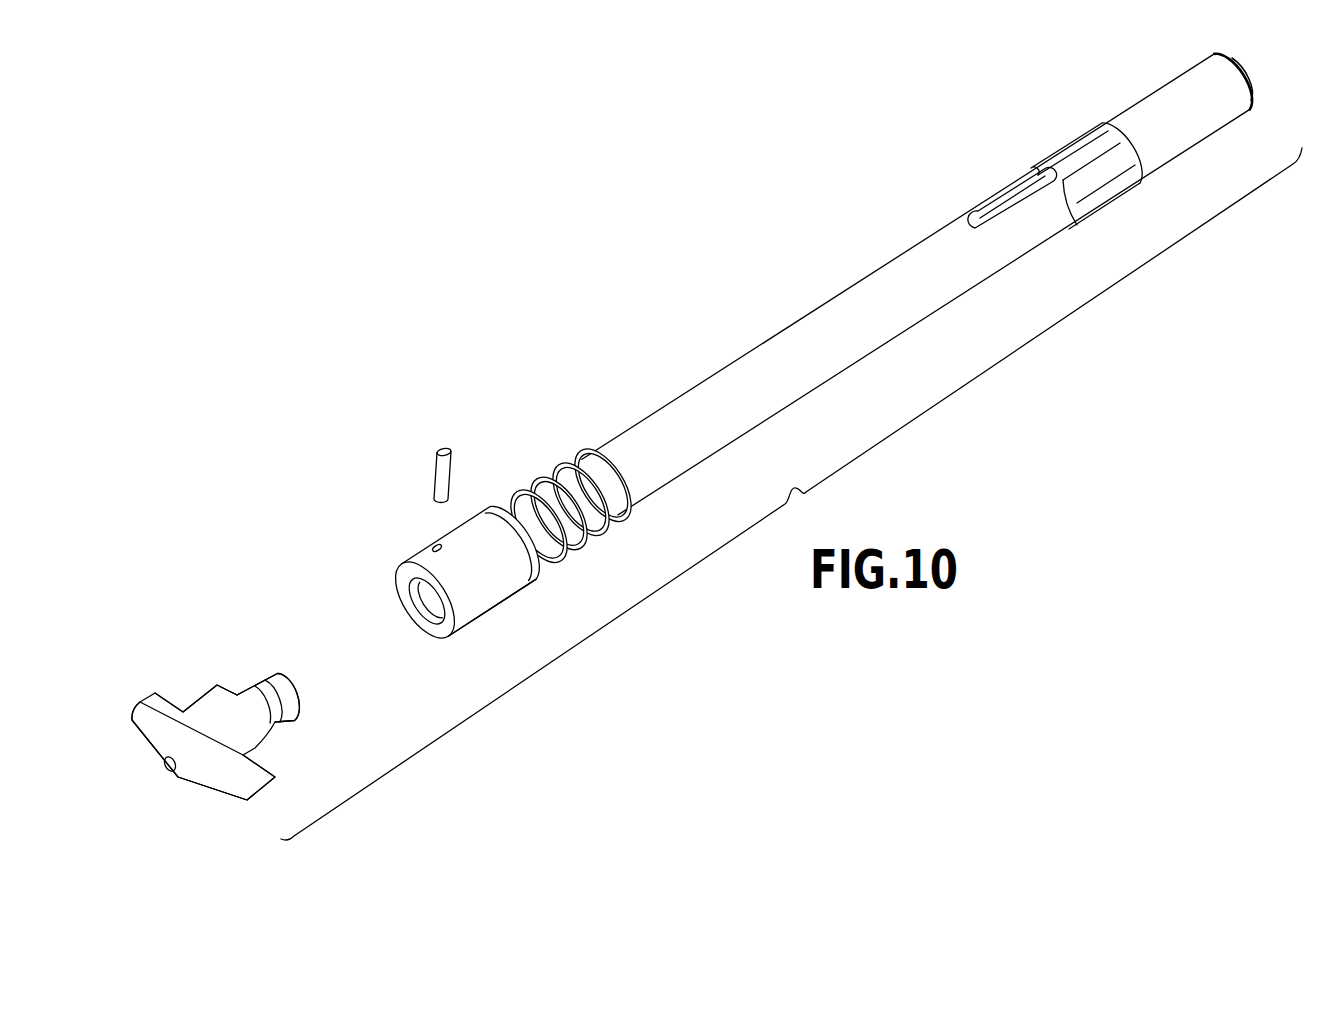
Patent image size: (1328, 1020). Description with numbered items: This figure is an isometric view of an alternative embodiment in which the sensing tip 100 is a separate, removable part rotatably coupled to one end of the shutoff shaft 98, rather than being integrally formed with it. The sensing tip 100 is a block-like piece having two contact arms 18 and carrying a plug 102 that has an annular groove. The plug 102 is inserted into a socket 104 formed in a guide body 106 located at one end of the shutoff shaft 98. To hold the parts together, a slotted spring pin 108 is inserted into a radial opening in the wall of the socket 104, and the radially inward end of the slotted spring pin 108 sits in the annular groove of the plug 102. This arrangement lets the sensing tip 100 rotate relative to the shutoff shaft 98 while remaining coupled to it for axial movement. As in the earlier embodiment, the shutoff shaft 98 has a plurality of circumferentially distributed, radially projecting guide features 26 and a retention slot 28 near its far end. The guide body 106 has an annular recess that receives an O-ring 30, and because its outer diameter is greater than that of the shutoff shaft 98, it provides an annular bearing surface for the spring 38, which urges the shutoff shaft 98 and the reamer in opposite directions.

The shutoff shaft 98 is at (808, 314).
The guide features 26 is at (1078, 146).
The retention slot 28 is at (990, 208).
The spring 38 is at (560, 470).
The O-ring 30 is at (512, 518).
The guide body 106 is at (477, 620).
The socket 104 is at (425, 617).
The slotted spring pin 108 is at (432, 476).
The sensing tip 100 is at (200, 697).
The plug 102 is at (265, 674).
The contact arms 18 is at (142, 699).